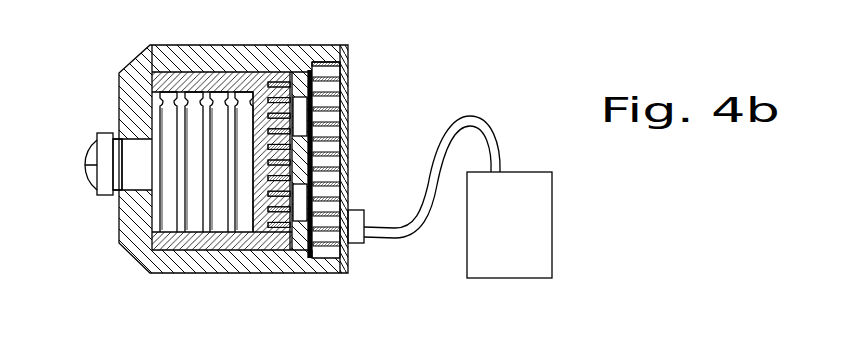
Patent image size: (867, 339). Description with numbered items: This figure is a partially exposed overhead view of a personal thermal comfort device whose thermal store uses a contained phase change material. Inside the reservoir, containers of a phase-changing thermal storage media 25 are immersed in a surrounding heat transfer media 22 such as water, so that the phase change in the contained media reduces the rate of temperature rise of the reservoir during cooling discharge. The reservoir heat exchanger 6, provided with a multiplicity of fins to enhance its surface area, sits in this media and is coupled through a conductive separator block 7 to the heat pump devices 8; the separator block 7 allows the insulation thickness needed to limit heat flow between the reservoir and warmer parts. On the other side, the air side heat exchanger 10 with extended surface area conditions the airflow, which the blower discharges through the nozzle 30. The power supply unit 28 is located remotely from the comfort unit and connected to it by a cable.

The reservoir heat exchanger 6 is at (270, 250).
The conductive separator block 7 is at (300, 118).
The heat pump devices 8 is at (308, 105).
The air side heat exchanger 10 is at (349, 148).
The heat transfer media 22 is at (142, 242).
The phase-changing thermal storage media containers 25 is at (231, 203).
The power supply unit 28 is at (486, 281).
The nozzle 30 is at (101, 132).